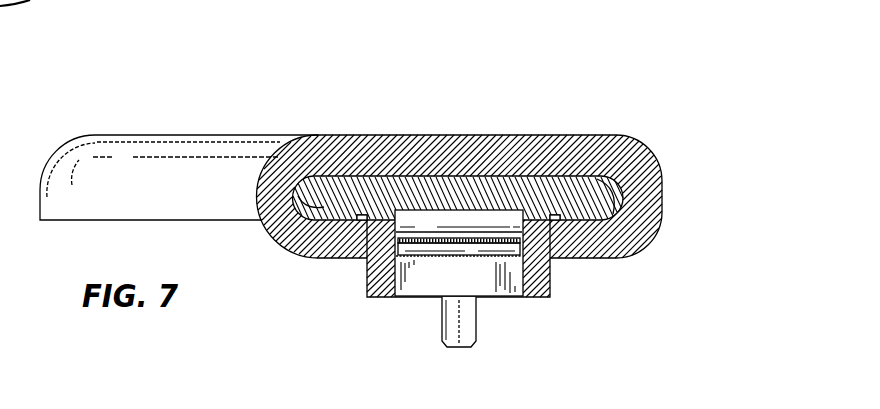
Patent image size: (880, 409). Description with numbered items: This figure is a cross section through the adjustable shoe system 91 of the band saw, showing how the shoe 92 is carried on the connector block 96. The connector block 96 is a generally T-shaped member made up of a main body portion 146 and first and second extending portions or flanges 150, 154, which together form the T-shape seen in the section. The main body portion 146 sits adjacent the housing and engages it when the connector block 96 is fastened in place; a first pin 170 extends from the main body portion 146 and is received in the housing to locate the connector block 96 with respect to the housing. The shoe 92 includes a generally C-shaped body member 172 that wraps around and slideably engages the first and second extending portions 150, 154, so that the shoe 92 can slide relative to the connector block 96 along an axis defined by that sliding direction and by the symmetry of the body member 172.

The adjustable shoe system 91 is at (437, 62).
The shoe 92 is at (182, 135).
The body member 172 is at (505, 135).
The first extending portion 150 is at (322, 205).
The second extending portion 154 is at (613, 205).
The main body portion 146 is at (381, 284).
The connector block 96 is at (500, 297).
The first pin 170 is at (456, 325).